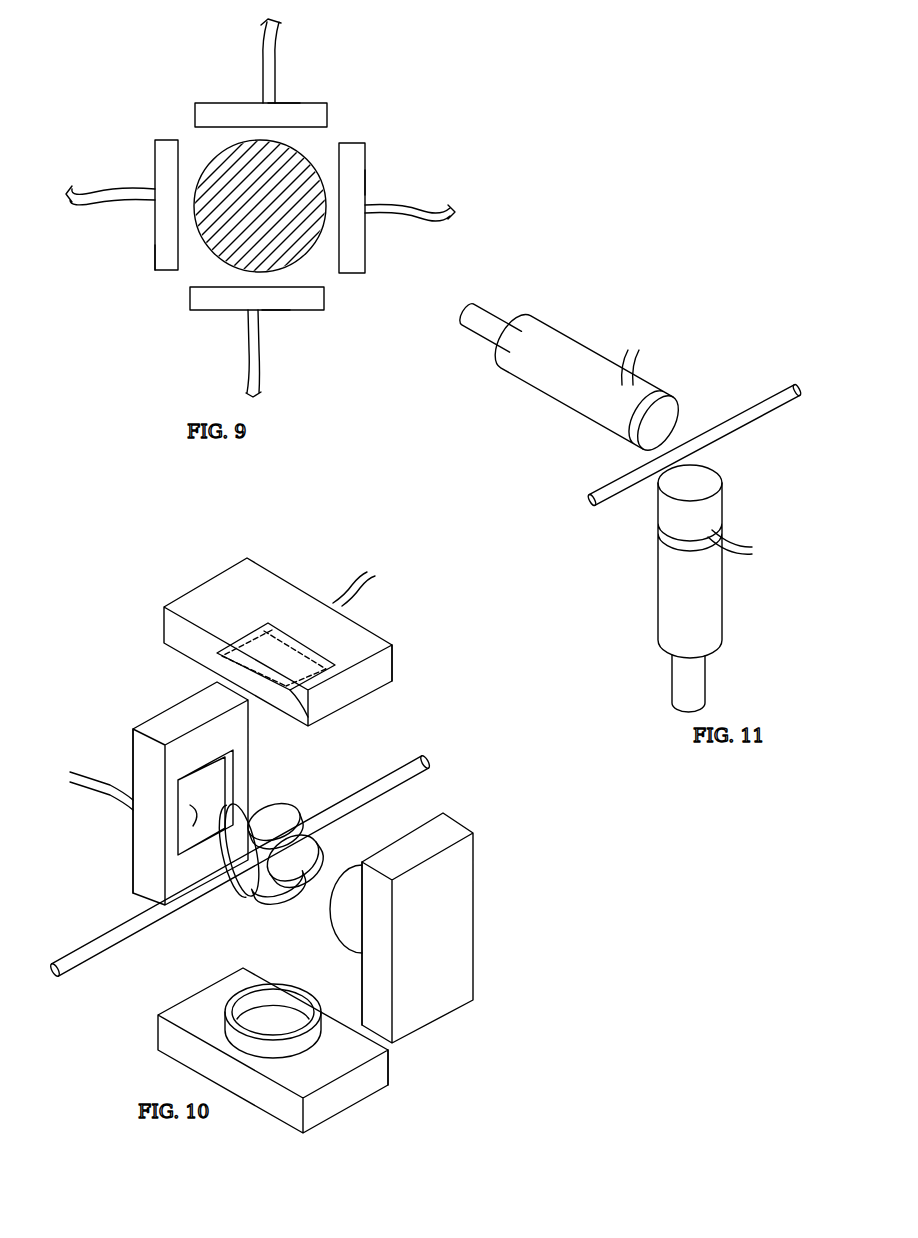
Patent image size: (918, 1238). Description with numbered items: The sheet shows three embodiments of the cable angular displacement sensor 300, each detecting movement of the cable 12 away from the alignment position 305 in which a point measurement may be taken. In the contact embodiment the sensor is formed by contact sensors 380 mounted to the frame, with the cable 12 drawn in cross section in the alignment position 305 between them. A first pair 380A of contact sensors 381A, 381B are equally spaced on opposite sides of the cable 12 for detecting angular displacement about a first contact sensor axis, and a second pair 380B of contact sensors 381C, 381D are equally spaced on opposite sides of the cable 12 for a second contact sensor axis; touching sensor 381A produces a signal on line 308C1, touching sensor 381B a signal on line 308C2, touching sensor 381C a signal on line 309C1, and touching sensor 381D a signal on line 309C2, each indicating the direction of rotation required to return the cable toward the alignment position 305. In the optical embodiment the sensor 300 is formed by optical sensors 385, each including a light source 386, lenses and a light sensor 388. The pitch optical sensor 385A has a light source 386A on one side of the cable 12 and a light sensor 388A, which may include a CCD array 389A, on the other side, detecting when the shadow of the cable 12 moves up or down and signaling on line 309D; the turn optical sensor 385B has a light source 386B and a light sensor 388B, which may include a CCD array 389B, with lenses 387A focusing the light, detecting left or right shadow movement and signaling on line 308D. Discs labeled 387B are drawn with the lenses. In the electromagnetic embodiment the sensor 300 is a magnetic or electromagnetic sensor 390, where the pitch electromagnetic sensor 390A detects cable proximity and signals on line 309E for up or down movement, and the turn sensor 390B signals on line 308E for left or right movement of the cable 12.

In FIG. 9, the cable 12 is at (297, 165).
In FIG. 11, the cable 12 is at (750, 408).
In FIG. 10, the cable 12 is at (140, 920).
In FIG. 9, the cable angular displacement sensor 300 is at (143, 86).
In FIG. 11, the cable angular displacement sensor 300 is at (688, 265).
In FIG. 10, the cable angular displacement sensor 300 is at (197, 520).
In FIG. 9, the alignment position 305 is at (164, 297).
In FIG. 10, the alignment position 305 is at (265, 872).
In FIG. 9, the line 308C1 is at (108, 189).
In FIG. 9, the line 308C2 is at (418, 216).
In FIG. 10, the line 308D is at (366, 585).
In FIG. 11, the line 308E is at (640, 356).
In FIG. 9, the line 309C1 is at (277, 60).
In FIG. 9, the line 309C2 is at (249, 380).
In FIG. 10, the line 309D is at (101, 779).
In FIG. 11, the line 309E is at (742, 546).
In FIG. 9, the contact sensors 380 is at (296, 104).
In FIG. 10, the contact sensors 380 is at (175, 538).
In FIG. 9, the first pair of contact sensors 380A is at (152, 272).
In FIG. 9, the second pair of contact sensors 380B is at (286, 103).
In FIG. 9, the contact sensor 381A is at (155, 258).
In FIG. 9, the contact sensor 381B is at (365, 248).
In FIG. 9, the contact sensor 381C is at (225, 103).
In FIG. 9, the contact sensor 381D is at (288, 311).
In FIG. 10, the optical sensors 385 is at (152, 572).
In FIG. 10, the pitch optical sensor 385A is at (128, 843).
In FIG. 10, the turn optical sensor 385B is at (360, 642).
In FIG. 10, the light source 386 is at (492, 968).
In FIG. 10, the light source 386A is at (473, 860).
In FIG. 10, the light source 386B is at (368, 1106).
In FIG. 10, the lenses 387A is at (228, 850).
In FIG. 10, the sensor disc 387B is at (280, 822).
In FIG. 10, the light sensor 388 is at (257, 573).
In FIG. 10, the light sensor 388A is at (168, 723).
In FIG. 10, the light sensor 388B is at (290, 583).
In FIG. 10, the CCD array 389A is at (178, 850).
In FIG. 10, the CCD array 389B is at (308, 726).
In FIG. 11, the magnetic or electromagnetic sensor 390 is at (720, 285).
In FIG. 11, the pitch electromagnetic sensor 390A is at (725, 497).
In FIG. 11, the turn sensor 390B is at (655, 392).